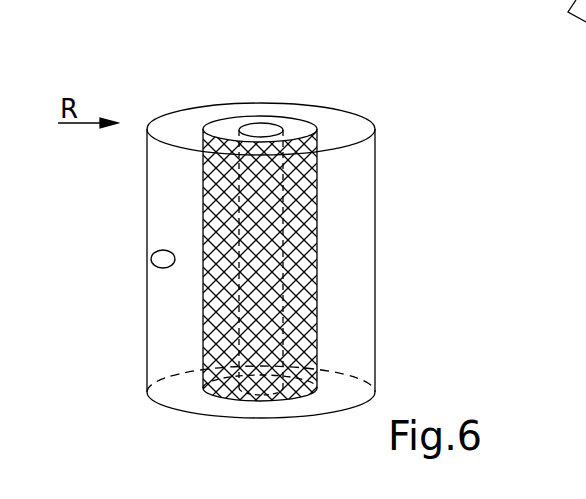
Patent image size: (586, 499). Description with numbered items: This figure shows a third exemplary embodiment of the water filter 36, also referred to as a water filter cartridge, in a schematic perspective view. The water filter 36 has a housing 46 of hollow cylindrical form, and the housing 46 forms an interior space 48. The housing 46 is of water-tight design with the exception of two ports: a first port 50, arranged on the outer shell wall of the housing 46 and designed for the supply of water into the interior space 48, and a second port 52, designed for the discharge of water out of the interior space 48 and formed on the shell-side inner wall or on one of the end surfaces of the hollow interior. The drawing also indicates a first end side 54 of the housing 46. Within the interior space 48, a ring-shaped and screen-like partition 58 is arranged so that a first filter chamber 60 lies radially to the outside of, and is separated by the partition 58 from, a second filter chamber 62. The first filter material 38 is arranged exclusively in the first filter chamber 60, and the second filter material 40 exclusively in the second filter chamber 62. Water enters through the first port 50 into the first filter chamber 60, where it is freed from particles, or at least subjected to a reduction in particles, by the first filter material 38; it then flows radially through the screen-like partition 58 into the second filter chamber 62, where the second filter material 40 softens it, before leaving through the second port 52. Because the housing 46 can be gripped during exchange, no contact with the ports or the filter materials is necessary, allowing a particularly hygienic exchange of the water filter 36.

The water filter 36 is at (377, 105).
The first filter material 38 is at (343, 240).
The second filter material 40 is at (310, 330).
The housing 46 is at (378, 143).
The interior space 48 is at (345, 186).
The first port 50 is at (160, 258).
The second port 52 is at (263, 128).
The first end side 54 is at (180, 127).
The partition 58 is at (302, 118).
The first filter chamber 60 is at (160, 300).
The second filter chamber 62 is at (210, 343).